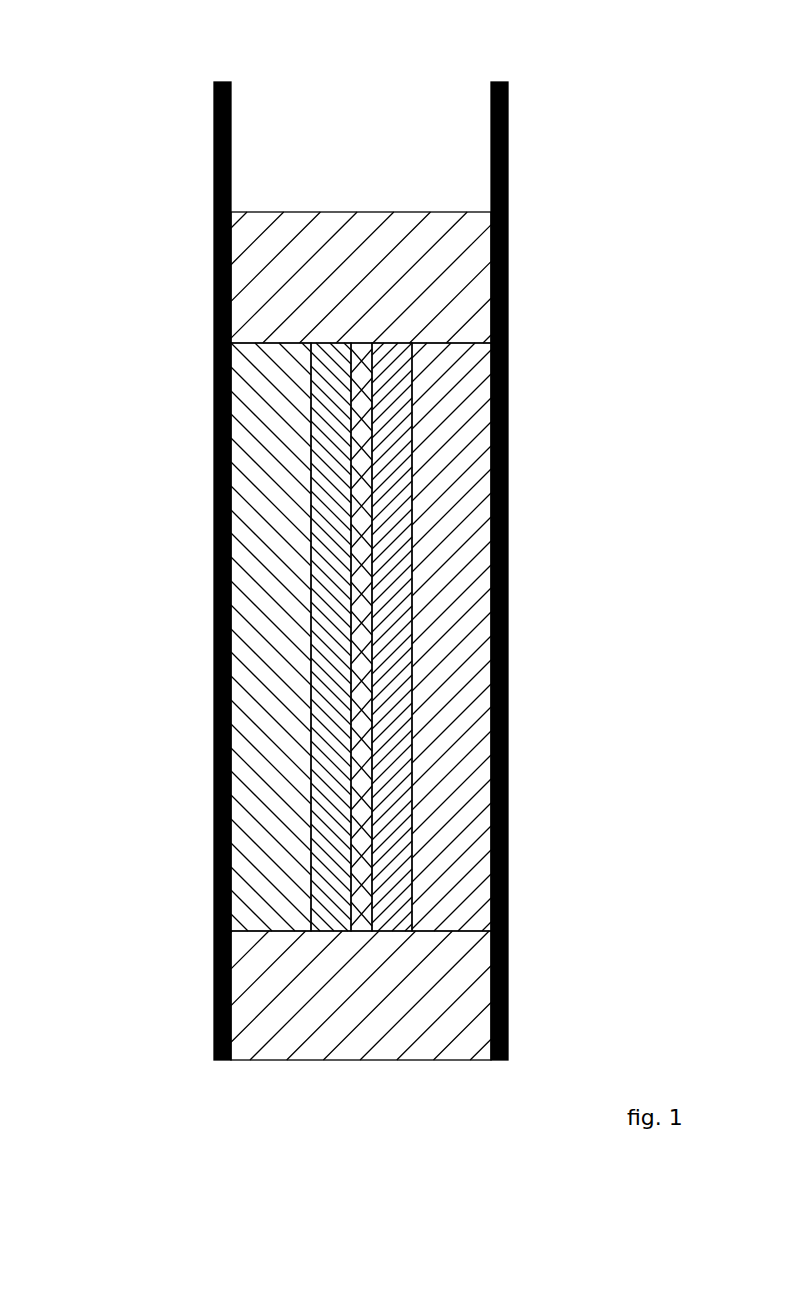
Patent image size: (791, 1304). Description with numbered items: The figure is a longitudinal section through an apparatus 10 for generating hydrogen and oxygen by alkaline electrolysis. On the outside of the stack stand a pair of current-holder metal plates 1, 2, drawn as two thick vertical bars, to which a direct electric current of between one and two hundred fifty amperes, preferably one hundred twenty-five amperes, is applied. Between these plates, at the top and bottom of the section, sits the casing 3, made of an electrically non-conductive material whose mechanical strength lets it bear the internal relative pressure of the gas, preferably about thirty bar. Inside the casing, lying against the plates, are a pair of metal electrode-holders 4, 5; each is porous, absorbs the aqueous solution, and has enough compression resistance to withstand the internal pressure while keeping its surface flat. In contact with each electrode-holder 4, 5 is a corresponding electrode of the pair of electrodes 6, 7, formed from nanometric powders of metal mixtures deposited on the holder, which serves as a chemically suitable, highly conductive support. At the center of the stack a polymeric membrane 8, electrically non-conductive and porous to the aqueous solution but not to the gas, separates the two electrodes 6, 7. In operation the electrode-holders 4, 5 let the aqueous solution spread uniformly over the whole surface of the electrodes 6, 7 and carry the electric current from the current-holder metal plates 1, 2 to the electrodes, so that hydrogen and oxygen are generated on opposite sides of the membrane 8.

The current-holder metal plate 1 is at (223, 76).
The current-holder metal plate 2 is at (505, 76).
The casing 3 is at (328, 280).
The metal electrode-holder 4 is at (472, 452).
The metal electrode-holder 5 is at (260, 485).
The electrode 6 is at (407, 829).
The electrode 7 is at (317, 752).
The polymeric membrane 8 is at (372, 645).
The apparatus 10 is at (98, 145).